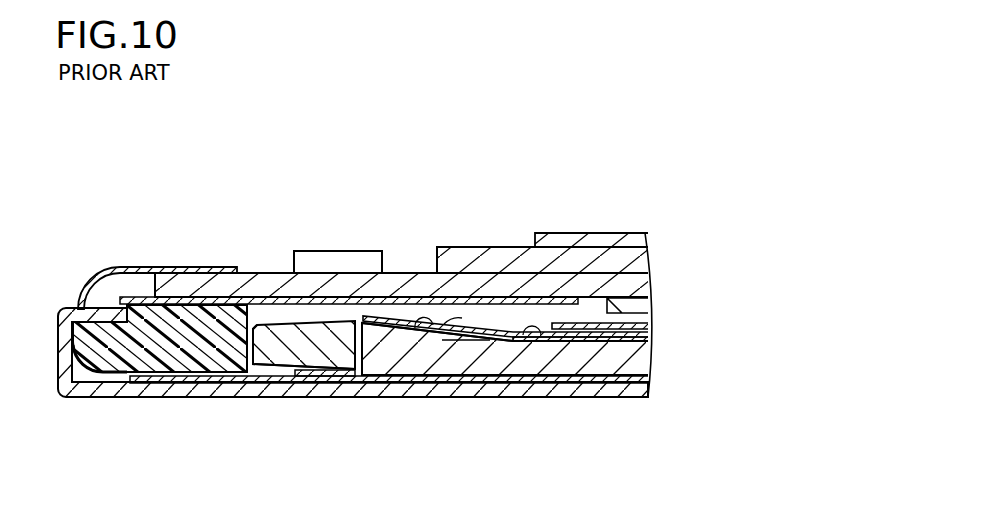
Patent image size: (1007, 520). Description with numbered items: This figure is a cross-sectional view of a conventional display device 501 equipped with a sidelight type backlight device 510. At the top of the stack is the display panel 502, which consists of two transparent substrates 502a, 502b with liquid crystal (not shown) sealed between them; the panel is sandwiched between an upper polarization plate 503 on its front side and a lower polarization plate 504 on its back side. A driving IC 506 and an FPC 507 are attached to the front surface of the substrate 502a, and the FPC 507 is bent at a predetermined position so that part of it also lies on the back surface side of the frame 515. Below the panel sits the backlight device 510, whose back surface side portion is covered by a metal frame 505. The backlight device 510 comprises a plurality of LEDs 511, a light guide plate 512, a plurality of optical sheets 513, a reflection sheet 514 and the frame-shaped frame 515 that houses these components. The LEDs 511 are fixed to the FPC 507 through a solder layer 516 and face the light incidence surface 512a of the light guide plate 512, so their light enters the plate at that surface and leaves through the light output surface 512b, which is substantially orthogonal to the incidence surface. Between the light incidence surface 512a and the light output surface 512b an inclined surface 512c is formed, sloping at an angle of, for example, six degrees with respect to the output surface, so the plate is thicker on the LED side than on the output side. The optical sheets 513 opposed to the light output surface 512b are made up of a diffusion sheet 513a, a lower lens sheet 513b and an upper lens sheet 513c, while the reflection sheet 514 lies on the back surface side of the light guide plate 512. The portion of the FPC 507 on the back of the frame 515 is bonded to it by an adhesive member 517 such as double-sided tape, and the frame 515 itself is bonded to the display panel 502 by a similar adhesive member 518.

The display device 501 is at (684, 151).
The display panel 502 is at (724, 238).
The transparent substrate 502a is at (635, 292).
The transparent substrate 502b is at (635, 262).
The upper polarization plate 503 is at (637, 238).
The lower polarization plate 504 is at (637, 306).
The metal frame 505 is at (583, 393).
The driving IC 506 is at (337, 262).
The FPC 507 is at (107, 272).
The sidelight type backlight device 510 is at (766, 307).
The LED 511 is at (295, 347).
The light guide plate 512 is at (634, 357).
The light incidence surface 512a is at (353, 373).
The light output surface 512b is at (510, 340).
The inclined surface 512c is at (435, 334).
The optical sheets 513 is at (740, 302).
The diffusion sheet 513a is at (640, 343).
The lower lens sheet 513b is at (640, 333).
The upper lens sheet 513c is at (640, 321).
The reflection sheet 514 is at (650, 385).
The frame 515 is at (102, 348).
The solder layer 516 is at (317, 373).
The adhesive member 517 is at (193, 373).
The adhesive member 518 is at (264, 302).